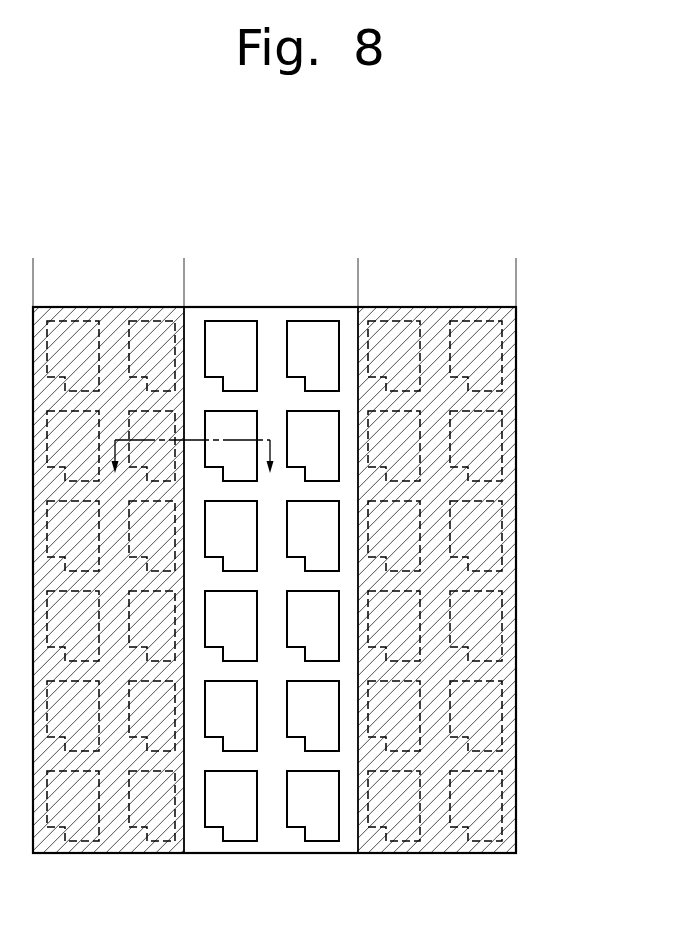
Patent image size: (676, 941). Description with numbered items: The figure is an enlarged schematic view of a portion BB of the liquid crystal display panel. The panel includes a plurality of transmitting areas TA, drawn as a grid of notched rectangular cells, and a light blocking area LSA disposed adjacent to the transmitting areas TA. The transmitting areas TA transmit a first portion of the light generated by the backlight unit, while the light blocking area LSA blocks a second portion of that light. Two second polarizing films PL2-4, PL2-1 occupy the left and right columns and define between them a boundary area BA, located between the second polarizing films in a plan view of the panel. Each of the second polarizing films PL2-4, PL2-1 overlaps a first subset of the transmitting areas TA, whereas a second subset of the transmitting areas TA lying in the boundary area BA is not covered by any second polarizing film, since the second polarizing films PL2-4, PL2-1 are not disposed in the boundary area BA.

The portion BB is at (497, 239).
The transmitting areas TA is at (502, 338).
The light blocking area LSA is at (504, 371).
The second polarizing film PL2-4 is at (184, 266).
The boundary area BA is at (184, 266).
The second polarizing film PL2-1 is at (516, 266).